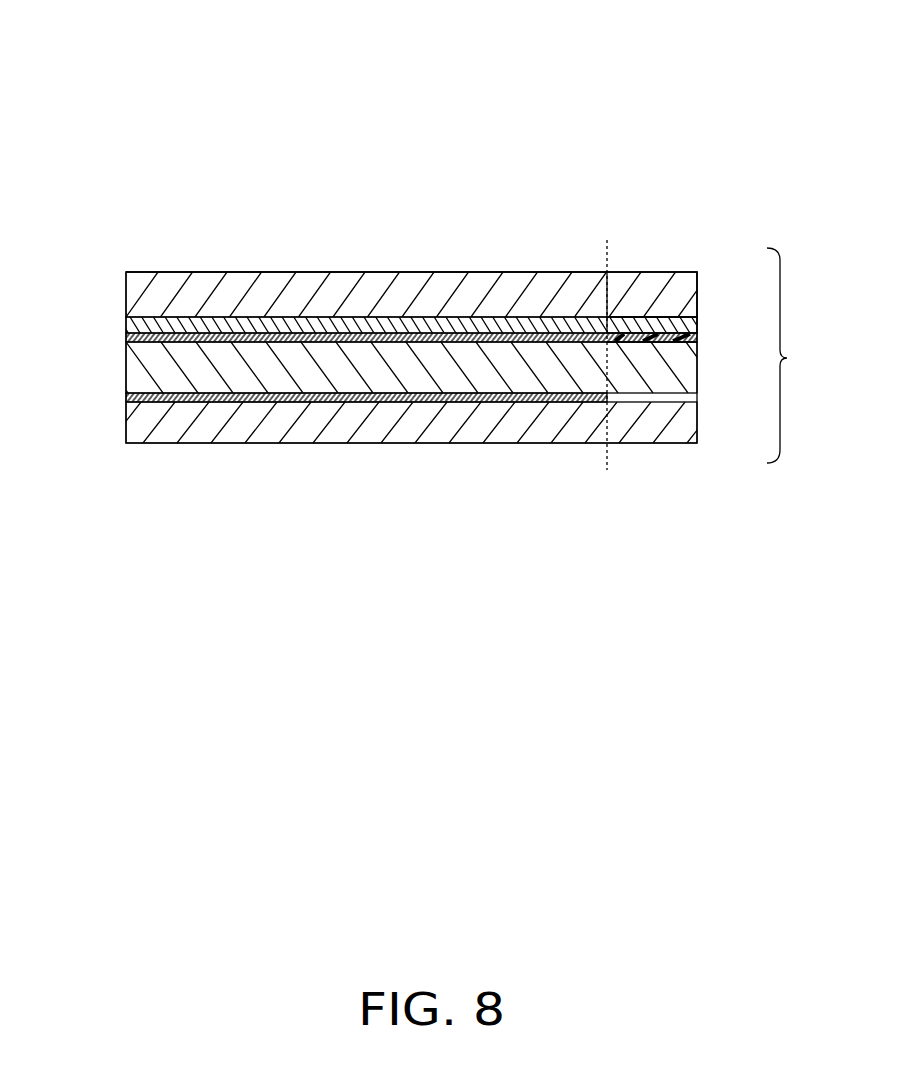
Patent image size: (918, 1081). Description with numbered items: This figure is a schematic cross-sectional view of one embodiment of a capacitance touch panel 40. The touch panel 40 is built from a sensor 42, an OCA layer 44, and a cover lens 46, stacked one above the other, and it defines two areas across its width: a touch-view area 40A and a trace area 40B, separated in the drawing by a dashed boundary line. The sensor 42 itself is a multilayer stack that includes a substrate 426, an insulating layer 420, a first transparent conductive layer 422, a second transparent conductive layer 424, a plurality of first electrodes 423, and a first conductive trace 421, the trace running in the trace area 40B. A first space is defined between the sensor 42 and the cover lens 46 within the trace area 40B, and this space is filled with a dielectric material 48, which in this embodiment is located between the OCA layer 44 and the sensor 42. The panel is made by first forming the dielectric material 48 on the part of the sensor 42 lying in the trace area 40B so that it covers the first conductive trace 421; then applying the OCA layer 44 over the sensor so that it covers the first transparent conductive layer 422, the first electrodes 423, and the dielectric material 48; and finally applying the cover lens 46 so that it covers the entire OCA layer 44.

The capacitance touch panel 40 is at (362, 58).
The touch-view area 40A is at (366, 253).
The trace area 40B is at (640, 345).
The sensor 42 is at (800, 355).
The OCA layer 44 is at (126, 333).
The cover lens 46 is at (138, 298).
The dielectric material 48 is at (695, 340).
The insulating layer 420 is at (667, 383).
The first conductive trace 421 is at (636, 318).
The first transparent conductive layer 422 is at (605, 345).
The first electrodes 423 is at (610, 316).
The second transparent conductive layer 424 is at (606, 402).
The substrate 426 is at (673, 433).